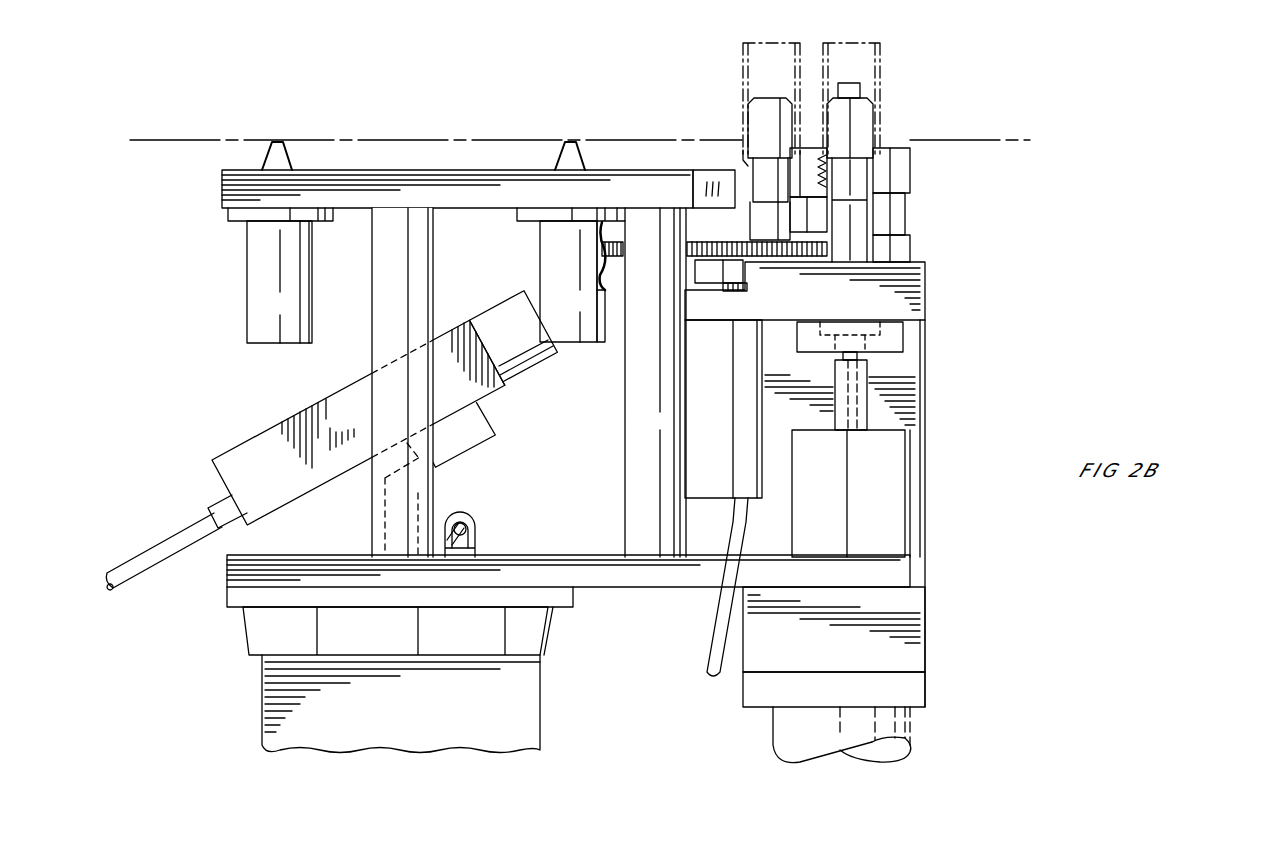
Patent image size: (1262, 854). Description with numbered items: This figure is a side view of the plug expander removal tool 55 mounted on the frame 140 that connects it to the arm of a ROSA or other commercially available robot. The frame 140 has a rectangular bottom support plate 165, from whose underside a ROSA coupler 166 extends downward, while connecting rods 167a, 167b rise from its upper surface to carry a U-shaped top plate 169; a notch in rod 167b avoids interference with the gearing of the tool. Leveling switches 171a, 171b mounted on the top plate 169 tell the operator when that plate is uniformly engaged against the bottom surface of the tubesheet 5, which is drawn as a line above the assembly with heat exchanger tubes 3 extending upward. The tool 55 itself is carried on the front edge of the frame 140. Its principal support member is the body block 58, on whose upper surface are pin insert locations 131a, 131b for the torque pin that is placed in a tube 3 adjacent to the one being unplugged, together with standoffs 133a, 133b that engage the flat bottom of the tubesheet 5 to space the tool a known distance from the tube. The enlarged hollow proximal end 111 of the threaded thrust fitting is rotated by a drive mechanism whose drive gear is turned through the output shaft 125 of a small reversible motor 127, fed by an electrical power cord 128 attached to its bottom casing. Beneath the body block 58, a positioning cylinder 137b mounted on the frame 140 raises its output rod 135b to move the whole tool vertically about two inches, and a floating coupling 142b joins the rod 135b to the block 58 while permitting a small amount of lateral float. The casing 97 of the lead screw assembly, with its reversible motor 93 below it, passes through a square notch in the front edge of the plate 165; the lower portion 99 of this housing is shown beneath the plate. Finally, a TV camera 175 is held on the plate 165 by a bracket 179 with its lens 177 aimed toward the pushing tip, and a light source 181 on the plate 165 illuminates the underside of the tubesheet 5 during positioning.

The heat exchanger tube 3 is at (742, 62).
The tubesheet 5 is at (640, 140).
The plug expander removal tool 55 is at (988, 262).
The body block 58 is at (818, 304).
The reversible electric motor 93 is at (885, 726).
The casing 97 is at (840, 610).
The housing lower block 99 is at (848, 699).
The enlarged hollow proximal end 111 is at (818, 205).
The output shaft 125 is at (721, 291).
The reversible motor 127 is at (722, 421).
The electrical power cord 128 is at (708, 640).
The pin insert location 131a is at (757, 116).
The pin insert location 131b is at (860, 118).
The standoff 133a is at (803, 165).
The standoff 133b is at (897, 180).
The output rod 135b is at (853, 398).
The positioning cylinder 137b is at (873, 485).
The frame 140 is at (357, 367).
The floating coupling 142b is at (886, 340).
The bottom support plate 165 is at (665, 572).
The ROSA coupler 166 is at (540, 630).
The connecting rod 167a is at (418, 300).
The connecting rod 167b is at (640, 437).
The top plate 169 is at (479, 208).
The leveling switch 171a is at (262, 278).
The leveling switch 171b is at (553, 272).
The TV camera 175 is at (358, 436).
The lens 177 is at (527, 354).
The bracket 179 is at (458, 437).
The light source 181 is at (480, 495).